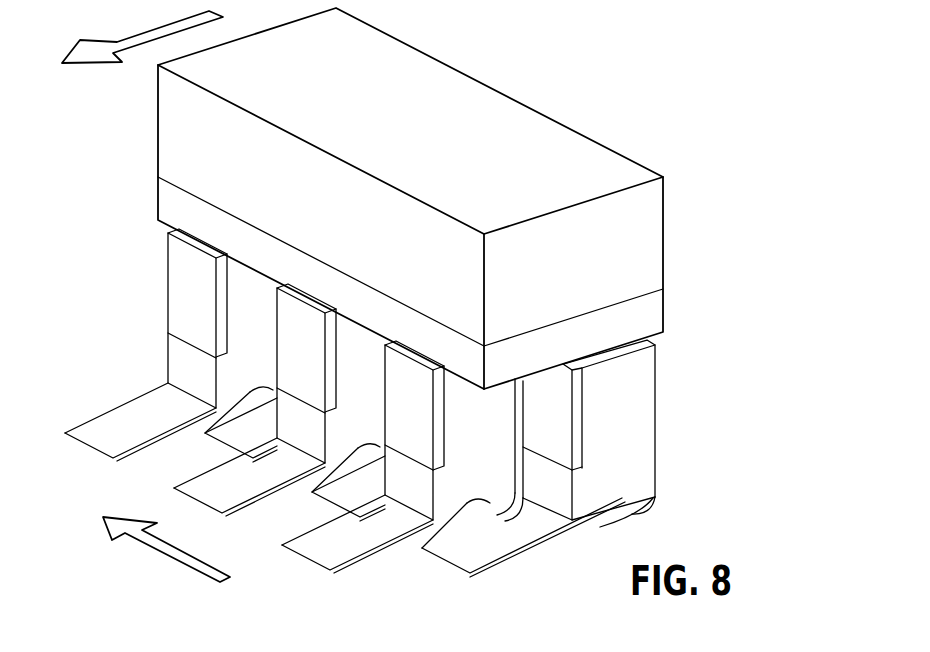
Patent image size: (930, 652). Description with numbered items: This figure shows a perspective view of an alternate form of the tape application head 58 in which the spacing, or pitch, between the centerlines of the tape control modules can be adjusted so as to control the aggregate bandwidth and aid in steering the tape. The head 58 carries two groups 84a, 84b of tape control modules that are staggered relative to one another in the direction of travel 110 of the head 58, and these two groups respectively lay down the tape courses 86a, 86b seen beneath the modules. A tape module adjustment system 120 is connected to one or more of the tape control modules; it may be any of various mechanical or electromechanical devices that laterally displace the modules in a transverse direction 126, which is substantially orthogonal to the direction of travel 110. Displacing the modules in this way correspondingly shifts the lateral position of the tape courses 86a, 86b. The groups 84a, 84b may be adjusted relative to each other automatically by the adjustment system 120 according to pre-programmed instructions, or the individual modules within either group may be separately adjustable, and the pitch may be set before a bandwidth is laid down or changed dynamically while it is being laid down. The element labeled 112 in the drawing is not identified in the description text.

The tape application head 58 is at (655, 136).
The direction of travel 110 is at (143, 44).
The tape module adjustment system 120 is at (177, 207).
The transverse direction 126 is at (172, 558).
The first group of tape control modules 84a is at (412, 418).
The second group of tape control modules 84b is at (623, 427).
The tape courses applied by first group 86a is at (110, 437).
The tape courses applied by second group 86b is at (250, 443).
The lead bend portion 112 is at (640, 512).